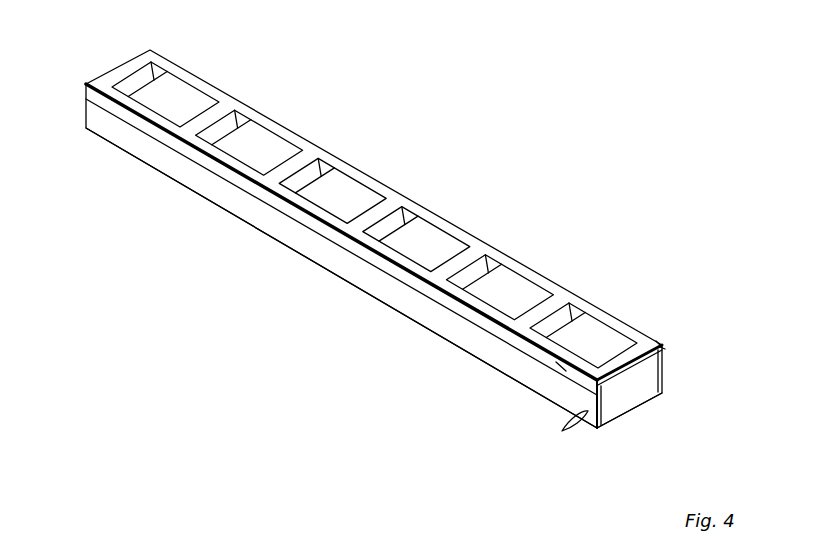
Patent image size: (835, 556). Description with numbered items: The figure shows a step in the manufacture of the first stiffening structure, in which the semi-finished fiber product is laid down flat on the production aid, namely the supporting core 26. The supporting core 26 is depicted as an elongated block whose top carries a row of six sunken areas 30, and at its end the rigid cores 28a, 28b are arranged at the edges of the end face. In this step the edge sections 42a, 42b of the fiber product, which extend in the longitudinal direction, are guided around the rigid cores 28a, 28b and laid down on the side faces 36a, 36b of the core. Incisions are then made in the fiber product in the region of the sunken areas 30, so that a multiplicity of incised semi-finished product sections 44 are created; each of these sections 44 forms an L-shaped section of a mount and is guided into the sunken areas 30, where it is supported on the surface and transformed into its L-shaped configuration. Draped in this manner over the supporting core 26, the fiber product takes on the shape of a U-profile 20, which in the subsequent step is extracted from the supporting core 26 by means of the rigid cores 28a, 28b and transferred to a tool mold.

The U-profile 20 is at (119, 65).
The supporting core 26 is at (247, 225).
The sunken areas 30 is at (425, 245).
The semi-finished product sections 44 is at (563, 323).
The rigid core 28a is at (609, 391).
The rigid core 28b is at (659, 364).
The side face 36a is at (588, 412).
The side face 36b is at (663, 347).
The edge section 42a is at (560, 367).
The edge section 42b is at (663, 347).